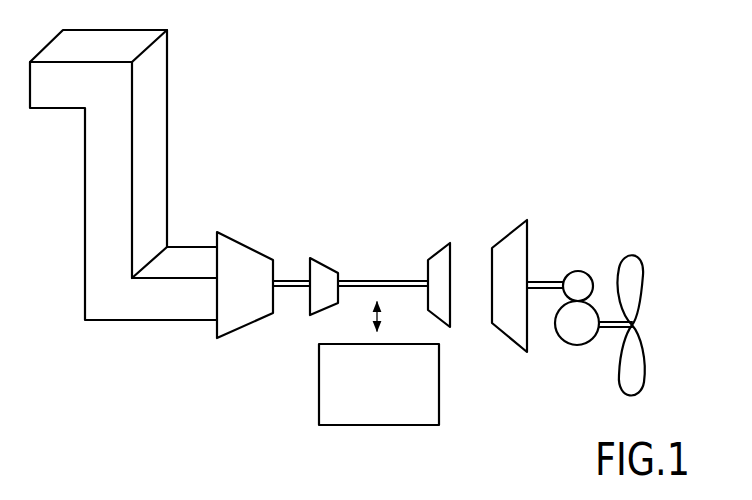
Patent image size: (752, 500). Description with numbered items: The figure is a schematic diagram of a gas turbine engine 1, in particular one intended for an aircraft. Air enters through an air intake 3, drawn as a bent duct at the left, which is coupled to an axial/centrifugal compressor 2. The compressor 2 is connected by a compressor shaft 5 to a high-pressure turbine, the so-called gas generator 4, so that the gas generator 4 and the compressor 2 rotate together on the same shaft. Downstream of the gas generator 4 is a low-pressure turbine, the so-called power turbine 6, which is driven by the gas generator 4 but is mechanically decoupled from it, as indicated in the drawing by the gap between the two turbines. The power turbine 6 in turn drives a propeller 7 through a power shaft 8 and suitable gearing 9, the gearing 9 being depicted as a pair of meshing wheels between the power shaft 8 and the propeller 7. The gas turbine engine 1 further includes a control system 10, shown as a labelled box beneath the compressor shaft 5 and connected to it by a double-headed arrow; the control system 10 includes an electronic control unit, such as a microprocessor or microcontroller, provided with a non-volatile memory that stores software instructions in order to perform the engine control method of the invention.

The gas turbine engine 1 is at (597, 77).
The axial/centrifugal compressor 2 is at (285, 244).
The air intake 3 is at (197, 227).
The gas generator 4 is at (440, 260).
The compressor shaft 5 is at (373, 281).
The power turbine 6 is at (510, 237).
The propeller 7 is at (640, 281).
The power shaft 8 is at (543, 278).
The gearing 9 is at (582, 273).
The control system 10 is at (435, 398).